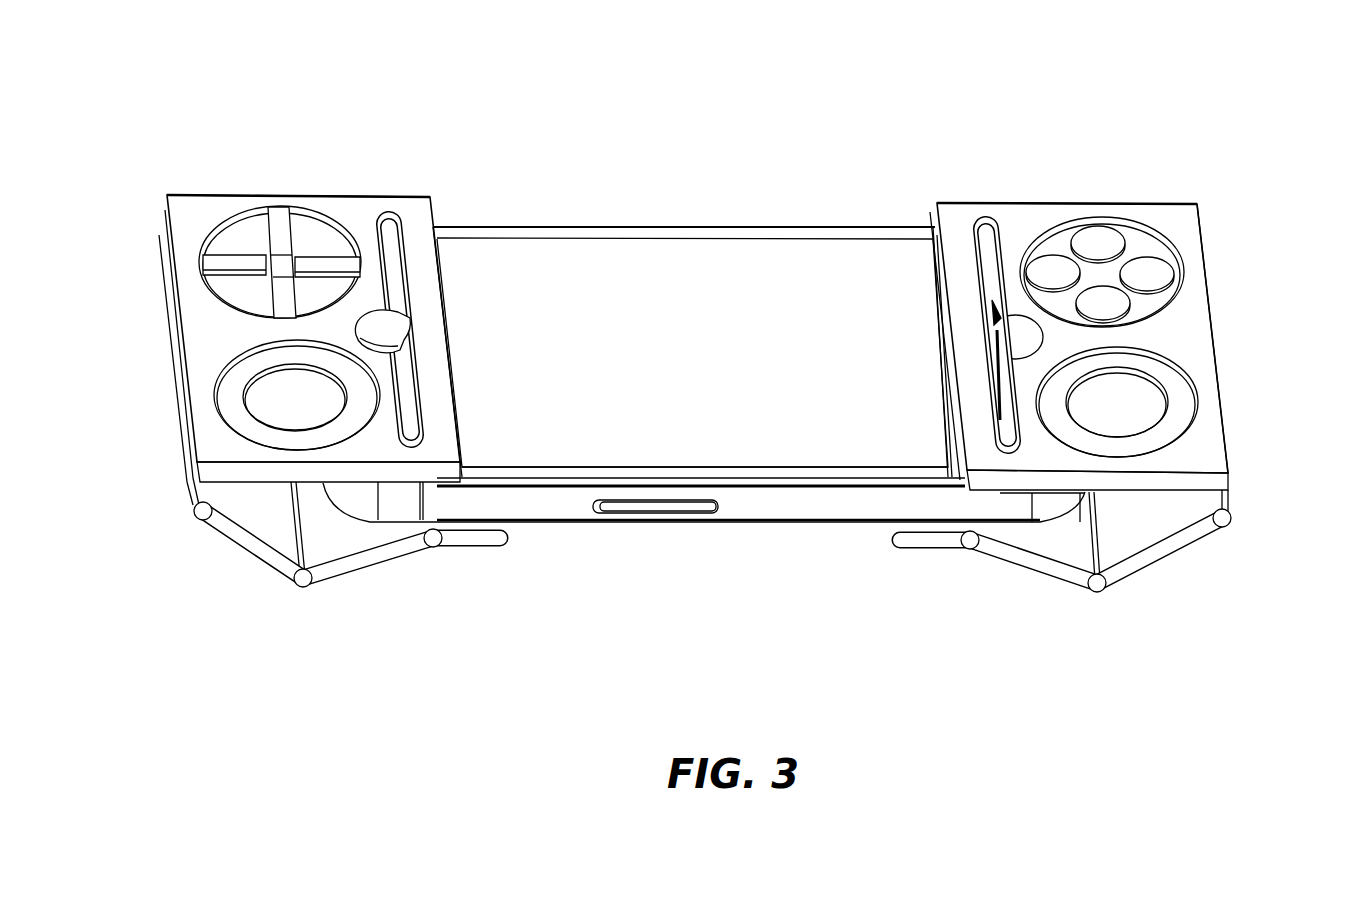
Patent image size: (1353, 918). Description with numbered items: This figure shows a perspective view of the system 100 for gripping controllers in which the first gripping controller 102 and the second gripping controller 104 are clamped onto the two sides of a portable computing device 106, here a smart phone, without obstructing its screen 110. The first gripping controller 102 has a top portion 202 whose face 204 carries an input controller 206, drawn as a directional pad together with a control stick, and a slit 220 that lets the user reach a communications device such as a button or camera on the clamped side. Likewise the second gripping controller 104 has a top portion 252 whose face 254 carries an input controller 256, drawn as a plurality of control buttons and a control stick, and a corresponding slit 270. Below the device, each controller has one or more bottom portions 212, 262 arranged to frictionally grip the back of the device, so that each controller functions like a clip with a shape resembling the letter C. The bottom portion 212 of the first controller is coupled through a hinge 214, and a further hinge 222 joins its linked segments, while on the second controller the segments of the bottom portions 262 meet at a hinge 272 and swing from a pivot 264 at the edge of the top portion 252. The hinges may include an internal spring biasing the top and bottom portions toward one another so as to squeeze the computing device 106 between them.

The system 100 is at (712, 58).
The first gripping controller 102 is at (167, 195).
The second gripping controller 104 is at (1197, 204).
The portable computing device 106 is at (670, 228).
The screen 110 is at (587, 290).
The top portion 202 is at (213, 465).
The face 204 is at (207, 330).
The input controller 206 is at (297, 233).
The bottom portion 212 is at (266, 540).
The hinge 214 is at (195, 518).
The slit 220 is at (397, 318).
The hinge 222 is at (300, 580).
The top portion 252 is at (1203, 475).
The face 254 is at (1200, 328).
The input controller 256 is at (1096, 232).
The bottom portion 262 is at (905, 545).
The right pivot 264 is at (1215, 520).
The slit 270 is at (994, 300).
The hinge 272 is at (968, 545).